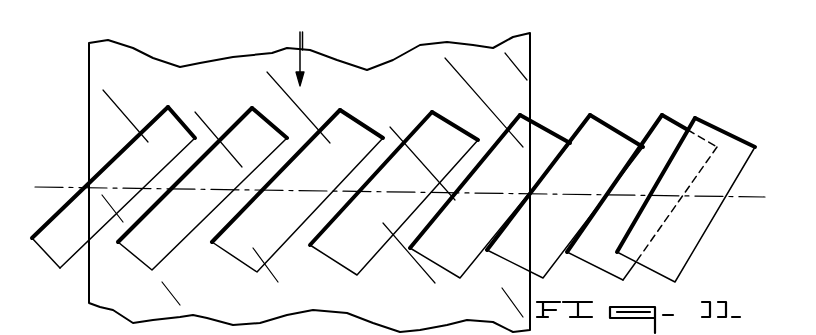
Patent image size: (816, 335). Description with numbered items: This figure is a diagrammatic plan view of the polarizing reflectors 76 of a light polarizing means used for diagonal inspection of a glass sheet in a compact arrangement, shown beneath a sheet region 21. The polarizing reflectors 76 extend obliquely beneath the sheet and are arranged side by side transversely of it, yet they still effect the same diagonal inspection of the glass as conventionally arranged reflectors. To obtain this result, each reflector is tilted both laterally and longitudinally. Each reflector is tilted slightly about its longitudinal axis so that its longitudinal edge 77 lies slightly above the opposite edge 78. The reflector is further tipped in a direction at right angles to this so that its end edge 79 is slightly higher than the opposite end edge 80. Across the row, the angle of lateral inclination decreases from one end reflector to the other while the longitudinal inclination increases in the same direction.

The wall panel 21 is at (437, 48).
The polarizing reflectors 76 is at (236, 250).
The longitudinal edge 77 is at (115, 153).
The opposite edge 78 is at (96, 238).
The end edge 79 is at (178, 118).
The opposite end edge 80 is at (50, 272).